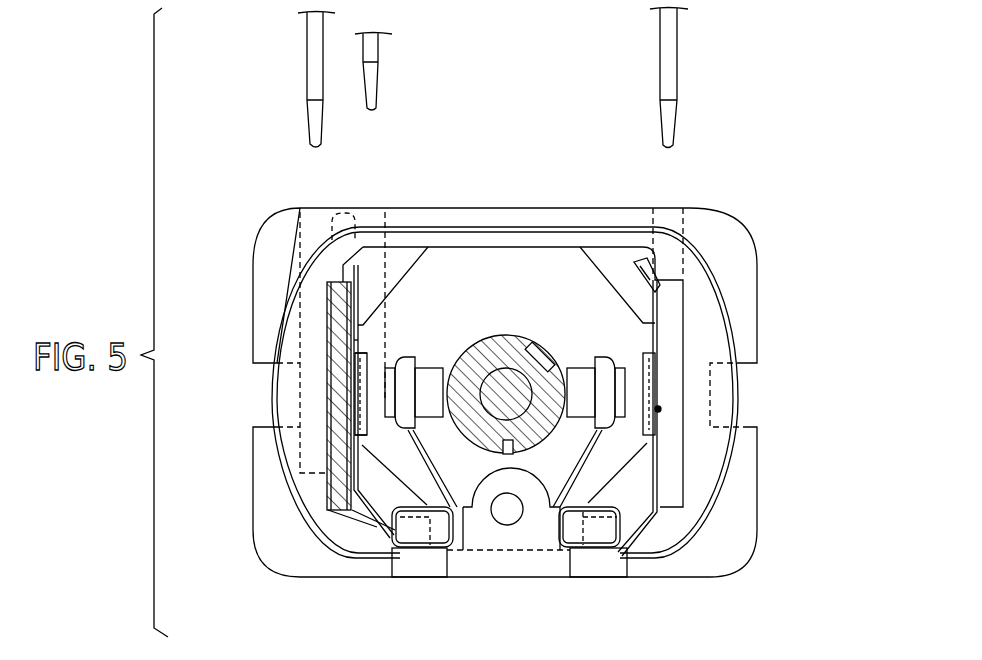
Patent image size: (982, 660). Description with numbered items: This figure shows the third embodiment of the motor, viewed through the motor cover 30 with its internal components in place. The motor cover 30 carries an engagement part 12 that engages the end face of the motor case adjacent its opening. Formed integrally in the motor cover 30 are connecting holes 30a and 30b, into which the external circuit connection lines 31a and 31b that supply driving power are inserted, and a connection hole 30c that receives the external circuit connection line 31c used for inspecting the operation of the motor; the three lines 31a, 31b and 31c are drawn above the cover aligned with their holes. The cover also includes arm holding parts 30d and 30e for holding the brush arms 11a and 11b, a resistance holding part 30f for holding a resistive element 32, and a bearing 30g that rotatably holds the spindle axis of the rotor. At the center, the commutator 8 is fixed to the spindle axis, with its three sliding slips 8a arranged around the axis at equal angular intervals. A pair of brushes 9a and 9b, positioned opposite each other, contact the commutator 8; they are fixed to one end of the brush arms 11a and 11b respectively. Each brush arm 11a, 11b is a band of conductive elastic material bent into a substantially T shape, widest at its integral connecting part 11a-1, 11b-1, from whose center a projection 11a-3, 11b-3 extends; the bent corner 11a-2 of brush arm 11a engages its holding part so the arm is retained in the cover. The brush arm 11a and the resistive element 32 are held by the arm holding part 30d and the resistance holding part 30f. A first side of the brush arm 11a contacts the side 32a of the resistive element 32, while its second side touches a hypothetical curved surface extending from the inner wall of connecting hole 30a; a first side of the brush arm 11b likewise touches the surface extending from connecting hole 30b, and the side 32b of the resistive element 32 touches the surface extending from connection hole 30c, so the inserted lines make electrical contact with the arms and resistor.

The motor cover 30 is at (765, 240).
The connecting hole 30a is at (381, 212).
The connecting hole 30b is at (674, 212).
The connection hole 30c is at (301, 212).
The arm holding part 30d is at (417, 553).
The arm holding part 30e is at (597, 553).
The resistance holding part 30f is at (342, 502).
The bearing 30g is at (513, 380).
The external circuit connection line 31a is at (378, 79).
The external circuit connection line 31b is at (670, 77).
The external circuit connection line 31c is at (307, 81).
The resistive element 32 is at (320, 324).
The side of resistive element 32a is at (372, 520).
The side of resistive element 32b is at (352, 508).
The brush arm 11a is at (362, 530).
The connecting part 11a-1 is at (362, 403).
The bent corner 11a-2 is at (363, 341).
The projection 11a-3 is at (352, 371).
The brush arm 11b is at (648, 537).
The connecting part 11b-1 is at (662, 387).
The projection 11b-3 is at (660, 372).
The engagement part 12 is at (695, 487).
The commutator 8 is at (483, 540).
The sliding slip 8a is at (523, 351).
The brush 9a is at (427, 380).
The brush 9b is at (583, 382).